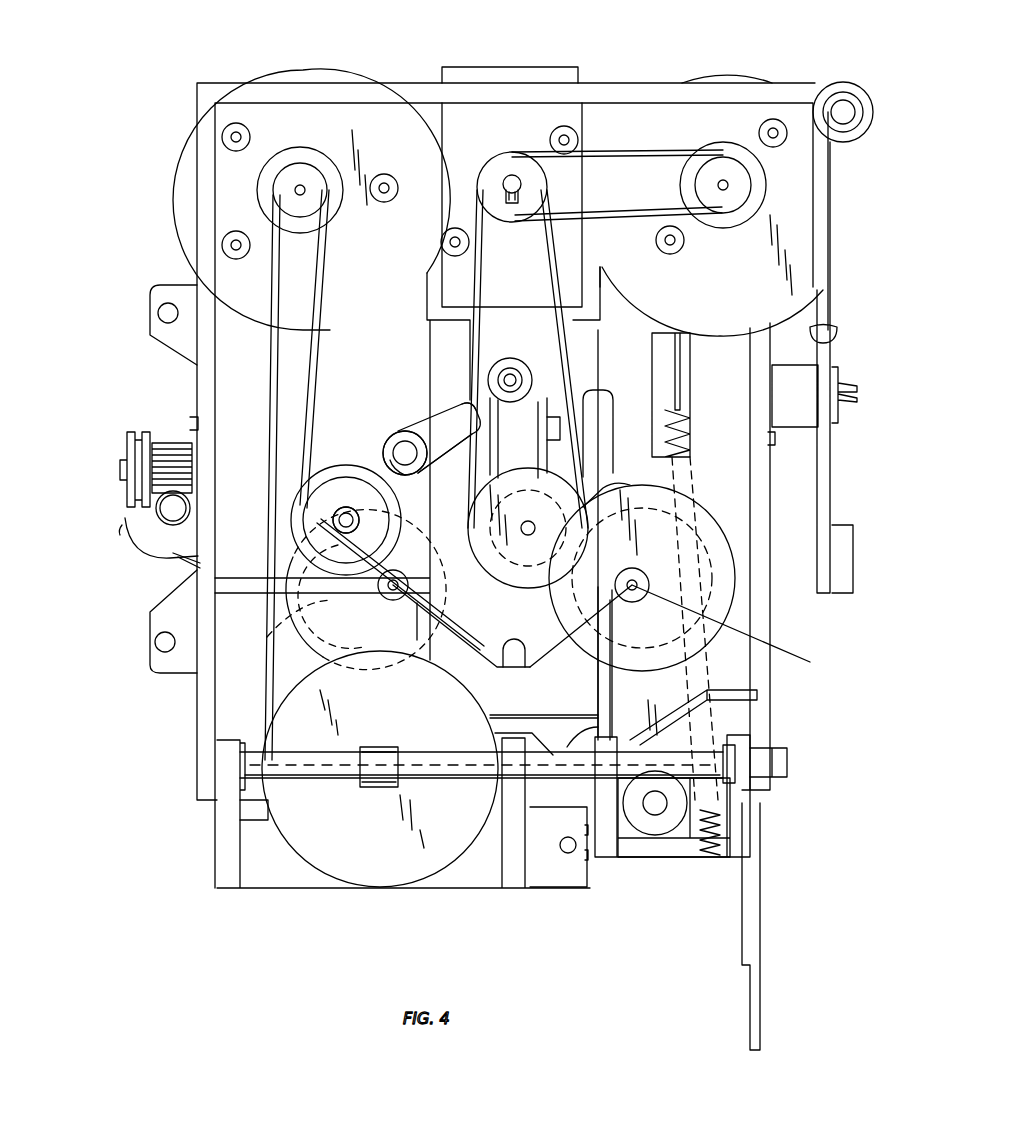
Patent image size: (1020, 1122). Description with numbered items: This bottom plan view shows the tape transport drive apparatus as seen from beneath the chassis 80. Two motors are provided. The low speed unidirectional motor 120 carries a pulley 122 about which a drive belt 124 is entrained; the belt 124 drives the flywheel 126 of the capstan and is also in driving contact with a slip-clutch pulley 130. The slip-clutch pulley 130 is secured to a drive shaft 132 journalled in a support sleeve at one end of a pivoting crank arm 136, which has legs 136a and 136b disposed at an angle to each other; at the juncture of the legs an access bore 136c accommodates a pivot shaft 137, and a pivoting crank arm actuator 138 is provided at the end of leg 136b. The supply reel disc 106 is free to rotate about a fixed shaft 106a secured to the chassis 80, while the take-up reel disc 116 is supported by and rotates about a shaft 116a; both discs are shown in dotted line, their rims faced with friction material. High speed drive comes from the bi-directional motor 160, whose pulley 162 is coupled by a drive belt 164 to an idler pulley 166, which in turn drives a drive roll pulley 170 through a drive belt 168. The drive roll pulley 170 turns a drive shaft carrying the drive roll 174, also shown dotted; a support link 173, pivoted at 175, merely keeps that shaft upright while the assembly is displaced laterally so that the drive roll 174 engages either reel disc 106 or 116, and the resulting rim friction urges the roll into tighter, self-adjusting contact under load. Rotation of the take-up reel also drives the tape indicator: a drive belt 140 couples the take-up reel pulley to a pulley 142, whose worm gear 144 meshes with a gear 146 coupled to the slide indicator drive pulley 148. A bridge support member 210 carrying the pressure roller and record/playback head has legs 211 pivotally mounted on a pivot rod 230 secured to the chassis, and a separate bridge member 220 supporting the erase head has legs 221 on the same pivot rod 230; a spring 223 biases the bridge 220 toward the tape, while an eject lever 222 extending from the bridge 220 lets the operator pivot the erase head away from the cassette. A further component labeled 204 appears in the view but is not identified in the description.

The chassis 80 is at (843, 75).
The supply reel disc 106 is at (705, 522).
The fixed shaft 106a is at (692, 620).
The reel disc 116 is at (275, 632).
The shaft 116a is at (380, 592).
The motor 120 is at (303, 70).
The pulley 122 is at (300, 163).
The drive belt 124 is at (397, 640).
The flywheel 126 is at (305, 845).
The slip-clutch pulley 130 is at (340, 470).
The drive shaft 132 is at (368, 505).
The pivoting crank arm 136 is at (404, 421).
The leg 136a is at (383, 487).
The leg 136b is at (440, 430).
The access bore 136c is at (446, 453).
The pivot shaft 137 is at (332, 511).
The pivoting crank arm actuator 138 is at (585, 398).
The drive belt 140 is at (198, 565).
The pulley 142 is at (130, 548).
The worm gear 144 is at (156, 512).
The gear 146 is at (180, 440).
The slide indicator drive pulley 148 is at (127, 460).
The bi-directional motor 160 is at (720, 74).
The pulley 162 is at (728, 158).
The drive belt 164 is at (668, 136).
The idler pulley 166 is at (500, 160).
The drive belt 168 is at (492, 258).
The drive roll pulley 170 is at (514, 576).
The support link 173 is at (505, 470).
The drive roll 174 is at (618, 485).
The pivot 175 is at (512, 358).
The top block 204 is at (560, 67).
The bridge support member 210 is at (290, 900).
The legs 211 is at (225, 765).
The bridge member 220 is at (667, 870).
The legs 221 is at (735, 745).
The eject lever 222 is at (762, 908).
The spring 223 is at (710, 855).
The pivot rod 230 is at (788, 770).